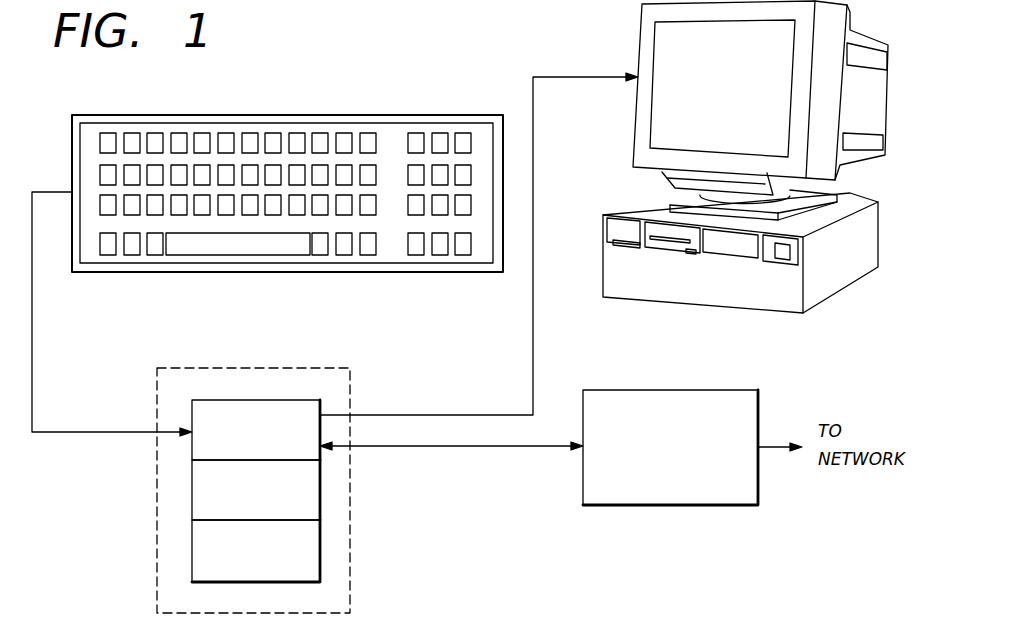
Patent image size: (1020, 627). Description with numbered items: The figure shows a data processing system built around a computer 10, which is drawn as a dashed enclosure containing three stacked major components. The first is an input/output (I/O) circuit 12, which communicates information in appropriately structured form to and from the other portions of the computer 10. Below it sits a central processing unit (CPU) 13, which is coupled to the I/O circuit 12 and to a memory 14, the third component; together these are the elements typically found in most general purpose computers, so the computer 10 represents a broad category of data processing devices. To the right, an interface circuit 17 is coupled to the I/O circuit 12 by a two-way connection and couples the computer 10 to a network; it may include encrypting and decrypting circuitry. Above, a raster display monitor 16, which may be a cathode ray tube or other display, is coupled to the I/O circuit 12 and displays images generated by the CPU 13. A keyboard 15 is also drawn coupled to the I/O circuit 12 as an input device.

The computer 10 is at (308, 368).
The input/output (I/O) circuit 12 is at (225, 400).
The central processing unit (CPU) 13 is at (320, 498).
The memory 14 is at (320, 551).
The keyboard 15 is at (308, 115).
The raster display monitor 16 is at (638, 37).
The interface circuit 17 is at (667, 390).